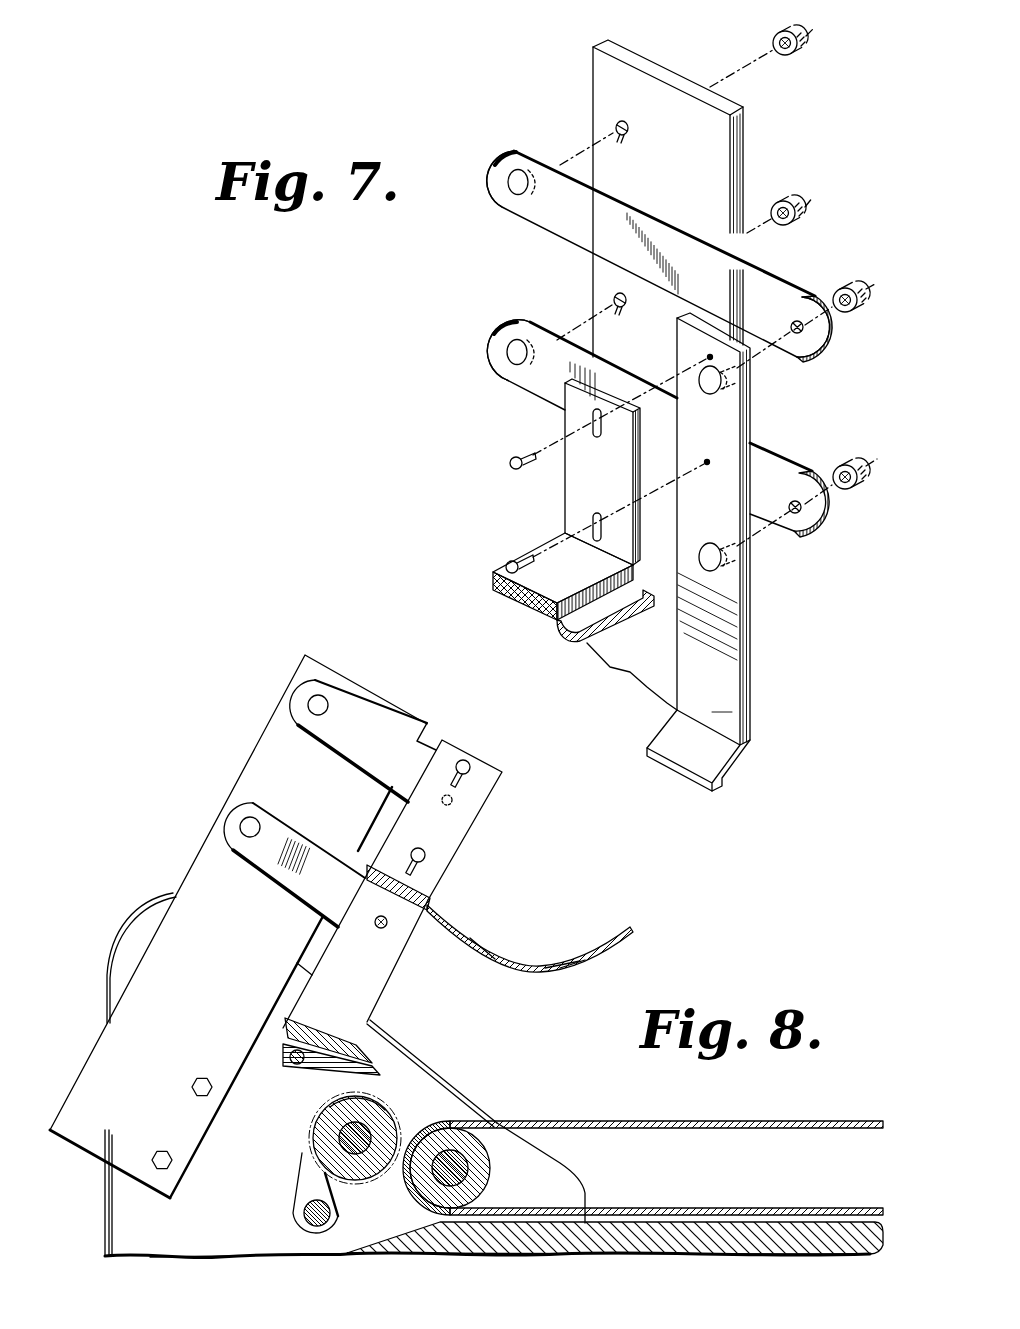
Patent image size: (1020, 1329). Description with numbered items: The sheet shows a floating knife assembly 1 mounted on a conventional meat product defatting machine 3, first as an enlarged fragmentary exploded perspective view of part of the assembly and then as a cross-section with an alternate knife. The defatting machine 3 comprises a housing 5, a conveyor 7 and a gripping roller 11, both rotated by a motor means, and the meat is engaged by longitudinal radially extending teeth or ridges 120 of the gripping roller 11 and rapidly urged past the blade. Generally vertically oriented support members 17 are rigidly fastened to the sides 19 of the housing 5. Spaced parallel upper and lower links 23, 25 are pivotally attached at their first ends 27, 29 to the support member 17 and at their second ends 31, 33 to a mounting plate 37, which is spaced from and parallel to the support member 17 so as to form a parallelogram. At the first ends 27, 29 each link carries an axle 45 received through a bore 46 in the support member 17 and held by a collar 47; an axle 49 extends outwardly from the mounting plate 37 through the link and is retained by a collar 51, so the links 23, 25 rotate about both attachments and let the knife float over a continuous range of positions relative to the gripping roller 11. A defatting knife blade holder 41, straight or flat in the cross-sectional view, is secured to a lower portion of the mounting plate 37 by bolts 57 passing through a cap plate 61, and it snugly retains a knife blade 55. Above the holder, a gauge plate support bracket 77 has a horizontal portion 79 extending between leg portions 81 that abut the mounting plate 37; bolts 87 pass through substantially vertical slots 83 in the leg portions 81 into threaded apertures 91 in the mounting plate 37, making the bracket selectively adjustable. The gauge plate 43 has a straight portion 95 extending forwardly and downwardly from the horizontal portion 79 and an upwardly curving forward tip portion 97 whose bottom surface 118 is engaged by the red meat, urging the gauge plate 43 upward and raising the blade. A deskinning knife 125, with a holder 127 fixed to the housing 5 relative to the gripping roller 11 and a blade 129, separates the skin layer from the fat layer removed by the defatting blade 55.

In FIG. 8, the floating knife assembly 1 is at (221, 754).
In FIG. 8, the defatting machine 3 is at (92, 1231).
In FIG. 8, the housing 5 is at (105, 1188).
In FIG. 8, the conveyor 7 is at (634, 1120).
In FIG. 8, the gripping roller 11 is at (364, 1174).
In FIG. 7, the support member 17 is at (593, 48).
In FIG. 8, the support member 17 is at (191, 868).
In FIG. 8, the sides of the housing 19 is at (215, 1228).
In FIG. 7, the upper link 23 is at (610, 200).
In FIG. 8, the upper link 23 is at (365, 700).
In FIG. 7, the lower link 25 is at (491, 351).
In FIG. 8, the lower link 25 is at (289, 822).
In FIG. 7, the first end of upper link 27 is at (535, 155).
In FIG. 7, the first end of lower link 29 is at (531, 324).
In FIG. 7, the second end of upper link 31 is at (786, 278).
In FIG. 7, the second end of lower link 33 is at (788, 461).
In FIG. 7, the mounting plate 37 is at (751, 716).
In FIG. 8, the mounting plate 37 is at (393, 962).
In FIG. 8, the defatting knife blade holder 41 is at (370, 1066).
In FIG. 7, the gauge plate 43 is at (566, 637).
In FIG. 8, the gauge plate 43 is at (613, 931).
In FIG. 7, the axle 45 is at (531, 194).
In FIG. 8, the axle 45 is at (327, 709).
In FIG. 7, the bore 46 is at (629, 129).
In FIG. 7, the collar 47 is at (780, 29).
In FIG. 7, the axle 49 is at (745, 380).
In FIG. 8, the axle 49 is at (445, 806).
In FIG. 7, the collar 51 is at (852, 286).
In FIG. 8, the knife blade 55 is at (418, 1061).
In FIG. 8, the bolt 57 is at (333, 1012).
In FIG. 8, the cap plate 61 is at (283, 1003).
In FIG. 7, the gauge plate support bracket 77 is at (560, 544).
In FIG. 8, the gauge plate support bracket 77 is at (502, 772).
In FIG. 7, the horizontal portion 79 is at (493, 578).
In FIG. 8, the horizontal portion 79 is at (434, 895).
In FIG. 7, the leg portion 81 is at (565, 480).
In FIG. 7, the vertical slot 83 is at (596, 437).
In FIG. 7, the bolt 87 is at (509, 465).
In FIG. 8, the bolt 87 is at (470, 757).
In FIG. 7, the threaded aperture 91 is at (706, 356).
In FIG. 8, the straight portion 95 is at (486, 947).
In FIG. 8, the forward tip portion 97 is at (563, 960).
In FIG. 8, the bottom surface 118 is at (572, 964).
In FIG. 8, the teeth or ridges 120 is at (307, 1112).
In FIG. 8, the deskinning knife 125 is at (296, 1086).
In FIG. 8, the holder 127 is at (290, 1052).
In FIG. 8, the blade 129 is at (390, 1103).